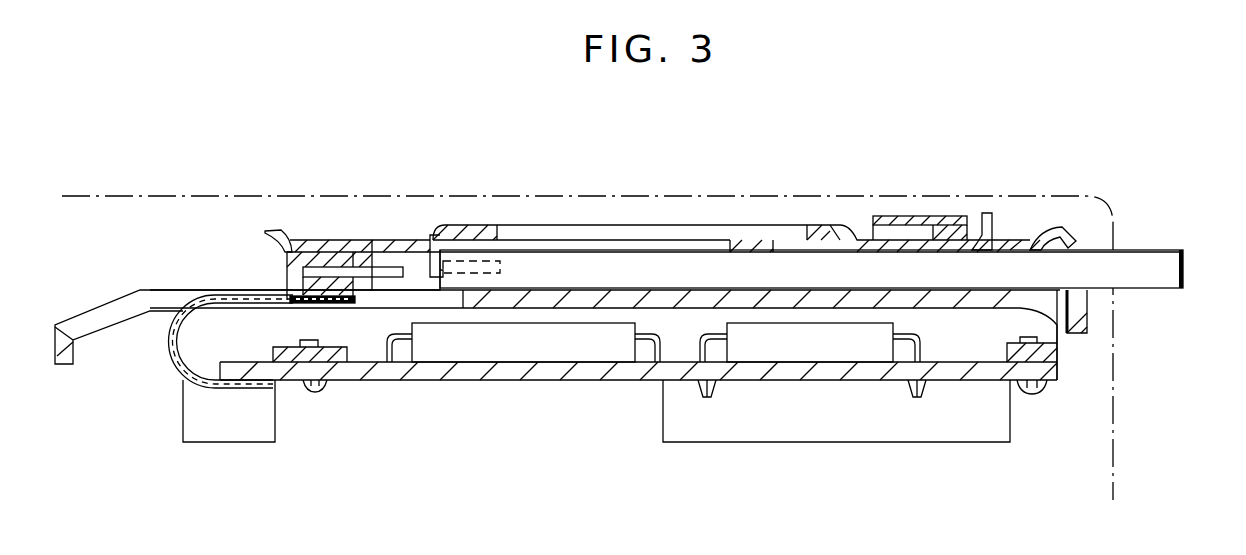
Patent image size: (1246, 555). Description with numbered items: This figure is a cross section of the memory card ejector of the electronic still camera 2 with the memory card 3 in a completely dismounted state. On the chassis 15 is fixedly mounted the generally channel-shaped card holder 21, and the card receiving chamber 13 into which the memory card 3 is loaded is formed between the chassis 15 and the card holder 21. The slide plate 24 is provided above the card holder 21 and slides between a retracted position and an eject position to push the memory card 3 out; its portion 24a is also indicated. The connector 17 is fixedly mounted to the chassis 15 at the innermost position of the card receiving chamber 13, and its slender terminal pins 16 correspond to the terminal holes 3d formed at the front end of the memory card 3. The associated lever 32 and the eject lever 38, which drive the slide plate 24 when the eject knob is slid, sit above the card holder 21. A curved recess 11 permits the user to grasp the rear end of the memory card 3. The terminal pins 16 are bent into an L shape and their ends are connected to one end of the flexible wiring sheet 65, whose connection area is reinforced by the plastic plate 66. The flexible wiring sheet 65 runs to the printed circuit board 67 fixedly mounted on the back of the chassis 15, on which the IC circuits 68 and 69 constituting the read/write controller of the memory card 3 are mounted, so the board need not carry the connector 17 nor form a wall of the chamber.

The electronic still camera 2 is at (1115, 452).
The memory card 3 is at (1152, 280).
The terminal holes 3d is at (492, 262).
The curved recess 11 is at (1120, 237).
The card receiving chamber 13 is at (577, 293).
The chassis 15 is at (948, 298).
The terminal pins 16 is at (372, 240).
The connector 17 is at (326, 257).
The card holder 21 is at (1020, 229).
The slide plate 24 is at (830, 232).
The slide plate projection 24a is at (423, 263).
The associated lever 32 is at (905, 216).
The eject lever 38 is at (970, 214).
The flexible wiring sheet 65 is at (169, 366).
The plastic plate 66 is at (338, 305).
The printed circuit board 67 is at (678, 382).
The IC circuit 68 is at (476, 345).
The IC circuit 69 is at (820, 345).